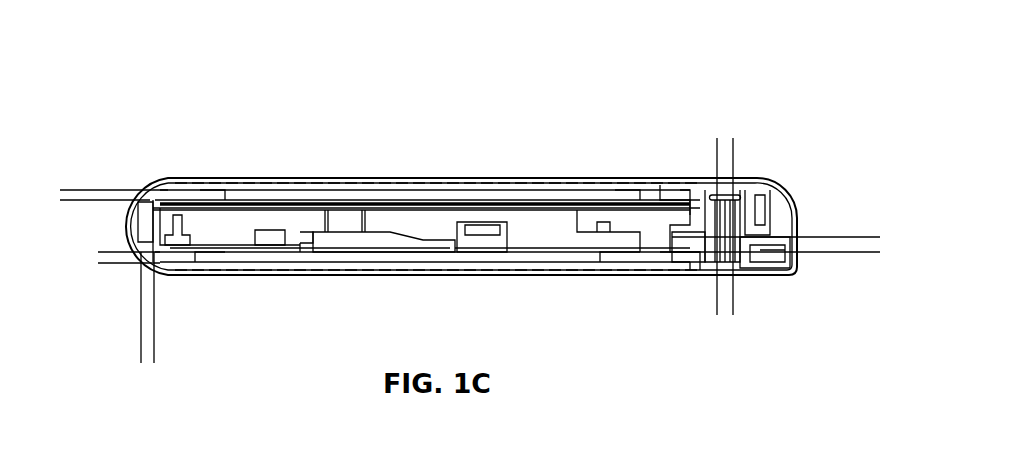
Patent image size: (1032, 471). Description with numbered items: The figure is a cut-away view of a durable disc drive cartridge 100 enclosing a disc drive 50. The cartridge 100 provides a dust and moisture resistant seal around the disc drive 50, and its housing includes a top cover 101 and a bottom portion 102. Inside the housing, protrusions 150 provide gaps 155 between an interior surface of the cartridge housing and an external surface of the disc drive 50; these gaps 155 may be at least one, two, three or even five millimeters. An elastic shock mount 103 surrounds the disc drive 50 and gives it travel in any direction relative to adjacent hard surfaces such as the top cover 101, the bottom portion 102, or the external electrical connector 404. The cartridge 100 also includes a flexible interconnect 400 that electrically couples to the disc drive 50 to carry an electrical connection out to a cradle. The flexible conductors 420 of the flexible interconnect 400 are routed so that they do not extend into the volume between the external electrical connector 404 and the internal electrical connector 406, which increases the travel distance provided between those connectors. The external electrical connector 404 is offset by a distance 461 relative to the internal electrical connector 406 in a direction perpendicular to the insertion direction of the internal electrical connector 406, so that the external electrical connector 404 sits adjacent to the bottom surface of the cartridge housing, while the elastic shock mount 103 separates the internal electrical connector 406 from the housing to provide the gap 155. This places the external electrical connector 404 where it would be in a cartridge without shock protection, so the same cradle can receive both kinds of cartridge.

The cartridge 100 is at (80, 80).
The top cover 101 is at (287, 185).
The bottom portion 102 is at (375, 268).
The elastic shock mount 103 is at (530, 200).
The disc drive 50 is at (282, 234).
The protrusions 150 is at (203, 195).
The gaps 155 is at (70, 210).
The flexible interconnect 400 is at (766, 200).
The external electrical connector 404 is at (745, 255).
The internal electrical connector 406 is at (687, 243).
The flexible conductors 420 is at (725, 192).
The distance 461 is at (864, 263).